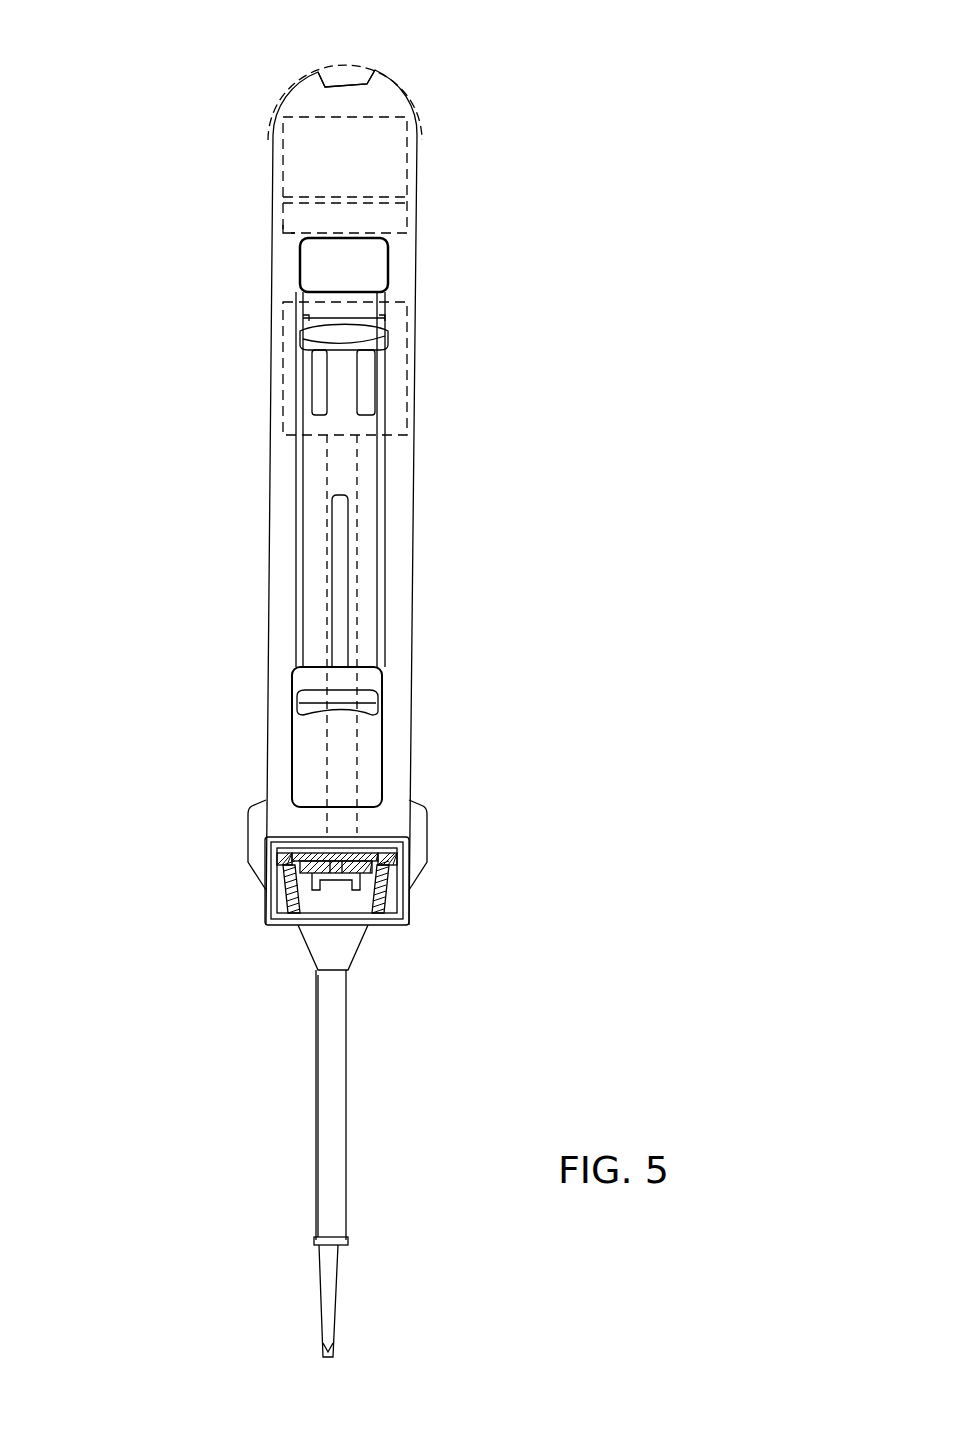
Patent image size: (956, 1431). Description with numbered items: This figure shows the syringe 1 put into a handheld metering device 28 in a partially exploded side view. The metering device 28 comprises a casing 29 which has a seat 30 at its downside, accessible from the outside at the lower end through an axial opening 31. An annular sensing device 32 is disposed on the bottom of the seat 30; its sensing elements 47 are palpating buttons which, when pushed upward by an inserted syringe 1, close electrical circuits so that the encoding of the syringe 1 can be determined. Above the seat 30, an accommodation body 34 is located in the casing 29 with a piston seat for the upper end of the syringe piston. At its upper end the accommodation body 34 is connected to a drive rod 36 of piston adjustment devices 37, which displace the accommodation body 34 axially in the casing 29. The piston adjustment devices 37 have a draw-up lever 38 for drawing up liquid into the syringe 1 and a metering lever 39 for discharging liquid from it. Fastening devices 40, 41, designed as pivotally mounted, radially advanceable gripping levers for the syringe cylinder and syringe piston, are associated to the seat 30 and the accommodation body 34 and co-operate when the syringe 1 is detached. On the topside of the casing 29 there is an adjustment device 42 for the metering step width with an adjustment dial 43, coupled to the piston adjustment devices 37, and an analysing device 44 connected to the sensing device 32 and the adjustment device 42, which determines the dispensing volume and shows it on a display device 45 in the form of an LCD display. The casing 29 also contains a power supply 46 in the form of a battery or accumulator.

The syringe 1 is at (308, 1123).
The handheld metering device 28 is at (252, 467).
The casing 29 is at (402, 558).
The seat 30 is at (373, 853).
The axial opening 31 is at (276, 940).
The annular sensing device 32 is at (313, 847).
The accommodation body 34 is at (407, 837).
The drive rod 36 is at (356, 745).
The piston adjustment devices 37 is at (390, 422).
The draw-up lever 38 is at (372, 700).
The metering lever 39 is at (376, 343).
The fastening device 40 is at (258, 858).
The fastening device 41 is at (277, 842).
The adjustment device 42 is at (407, 152).
The adjustment dial 43 is at (367, 77).
The analysing device 44 is at (407, 222).
The display device 45 is at (373, 268).
The power supply 46 is at (283, 230).
The sensing element 47 is at (350, 867).